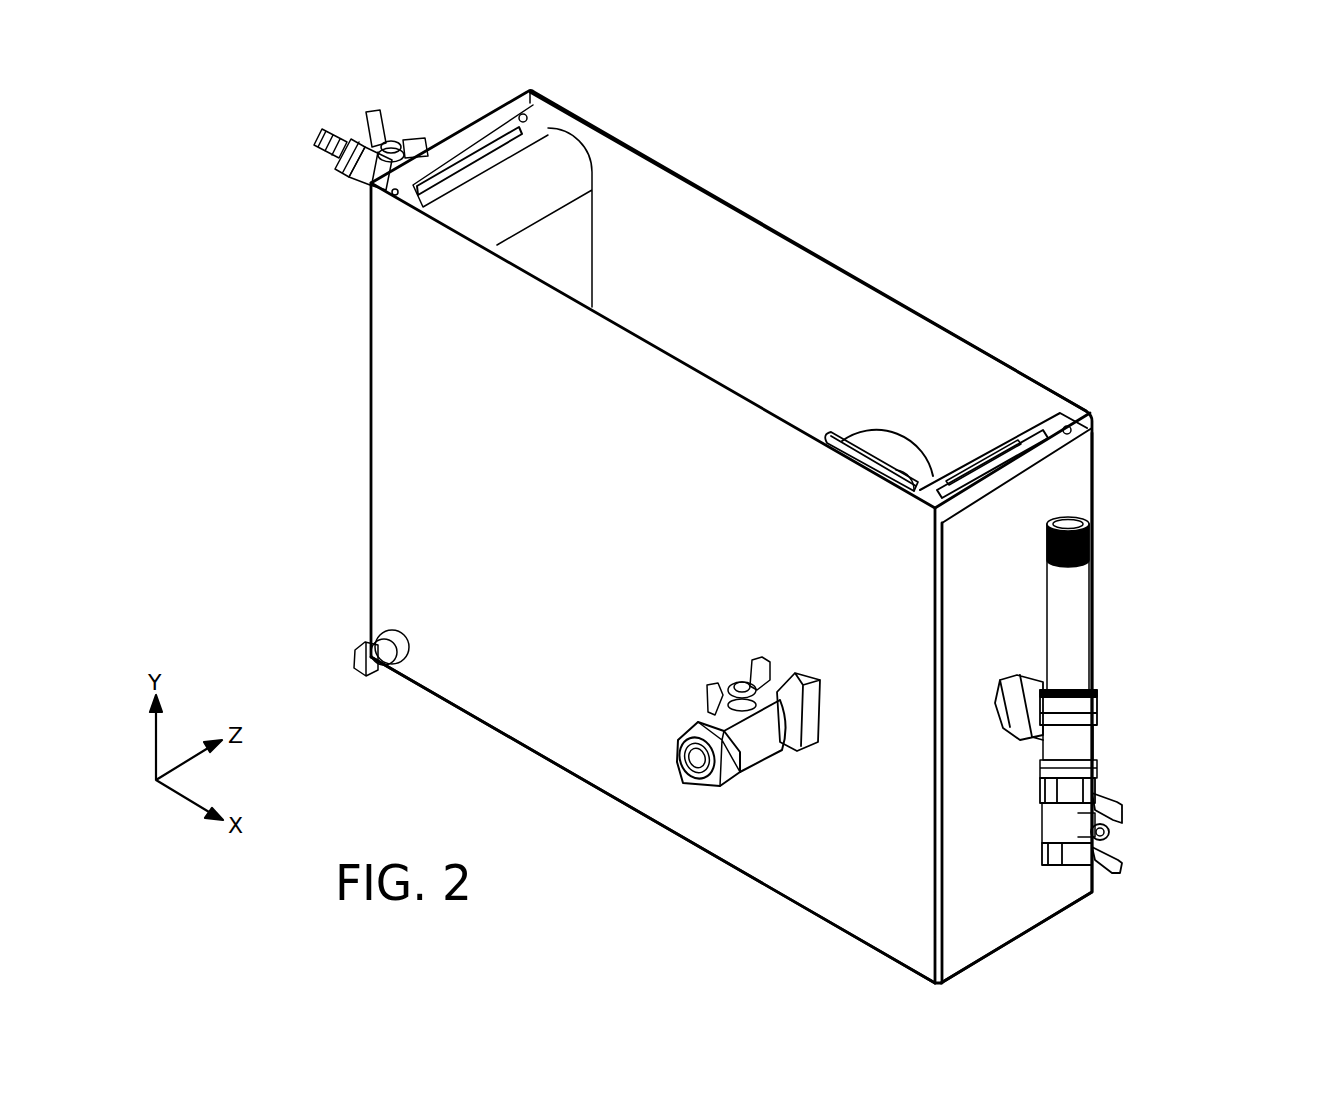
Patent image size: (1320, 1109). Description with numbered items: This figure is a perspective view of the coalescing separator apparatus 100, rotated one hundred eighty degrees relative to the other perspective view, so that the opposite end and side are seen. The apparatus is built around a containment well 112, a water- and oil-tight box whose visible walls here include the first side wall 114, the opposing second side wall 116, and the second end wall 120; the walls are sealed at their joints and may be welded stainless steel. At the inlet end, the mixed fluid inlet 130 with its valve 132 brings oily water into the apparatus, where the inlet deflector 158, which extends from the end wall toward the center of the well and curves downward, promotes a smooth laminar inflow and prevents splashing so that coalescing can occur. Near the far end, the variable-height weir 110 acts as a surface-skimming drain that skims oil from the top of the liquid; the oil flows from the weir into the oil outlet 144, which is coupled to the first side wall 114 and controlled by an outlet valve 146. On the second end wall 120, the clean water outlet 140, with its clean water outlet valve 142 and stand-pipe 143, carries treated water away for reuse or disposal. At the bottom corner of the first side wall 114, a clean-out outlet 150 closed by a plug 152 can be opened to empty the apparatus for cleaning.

The coalescing separator apparatus 100 is at (1105, 321).
The variable-height weir 110 is at (910, 443).
The containment well 112 is at (690, 257).
The first side wall 114 is at (787, 877).
The second side wall 116 is at (857, 275).
The second end wall 120 is at (1075, 480).
The mixed fluid inlet 130 is at (345, 172).
The valve 132 is at (378, 113).
The clean water outlet 140 is at (1005, 690).
The clean water outlet valve 142 is at (1122, 800).
The stand-pipe 143 is at (1095, 562).
The oil outlet 144 is at (700, 835).
The outlet valve 146 is at (700, 835).
The clean-out outlet 150 is at (370, 632).
The plug 152 is at (350, 662).
The inlet deflector 158 is at (550, 167).